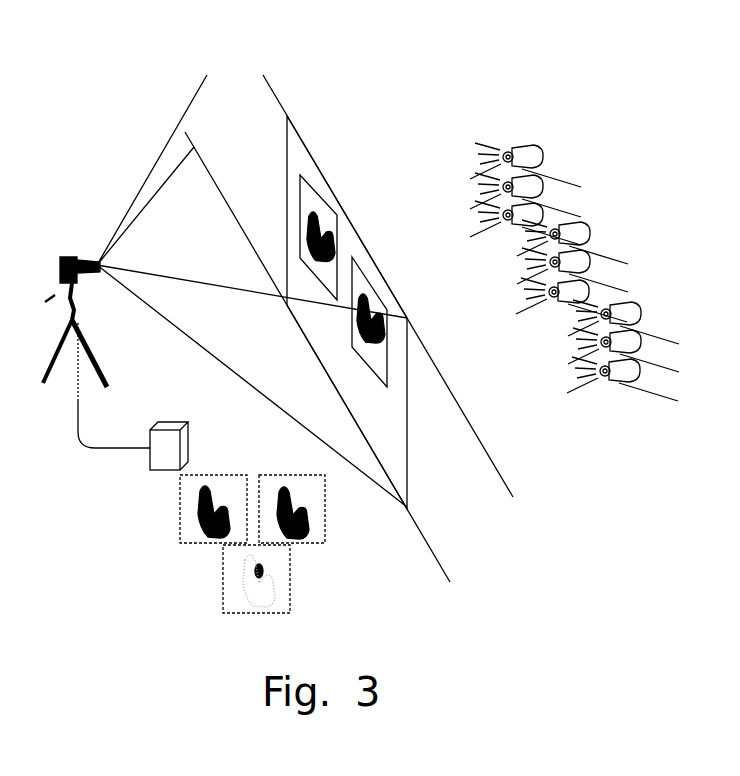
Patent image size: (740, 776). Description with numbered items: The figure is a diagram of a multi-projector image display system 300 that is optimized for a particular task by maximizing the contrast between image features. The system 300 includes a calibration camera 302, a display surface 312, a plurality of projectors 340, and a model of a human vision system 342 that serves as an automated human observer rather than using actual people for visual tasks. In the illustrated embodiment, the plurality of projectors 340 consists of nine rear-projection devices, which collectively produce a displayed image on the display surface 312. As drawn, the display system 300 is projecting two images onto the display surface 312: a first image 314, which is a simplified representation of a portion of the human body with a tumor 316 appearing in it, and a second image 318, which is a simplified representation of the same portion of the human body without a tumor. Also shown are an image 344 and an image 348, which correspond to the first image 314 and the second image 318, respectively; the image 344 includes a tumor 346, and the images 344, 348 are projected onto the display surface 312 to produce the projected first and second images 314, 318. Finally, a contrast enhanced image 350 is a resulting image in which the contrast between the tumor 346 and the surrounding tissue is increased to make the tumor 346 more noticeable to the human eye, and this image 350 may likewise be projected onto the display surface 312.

The multi-projector image display system 300 is at (130, 64).
The calibration camera 302 is at (66, 257).
The display surface 312 is at (293, 122).
The first image 314 is at (300, 176).
The tumor 316 is at (336, 193).
The second image 318 is at (373, 303).
The plurality of projectors 340 is at (518, 148).
The model of a human vision system 342 is at (170, 422).
The image 344 is at (191, 474).
The tumor 346 is at (217, 497).
The image 348 is at (325, 507).
The contrast enhanced image 350 is at (221, 592).